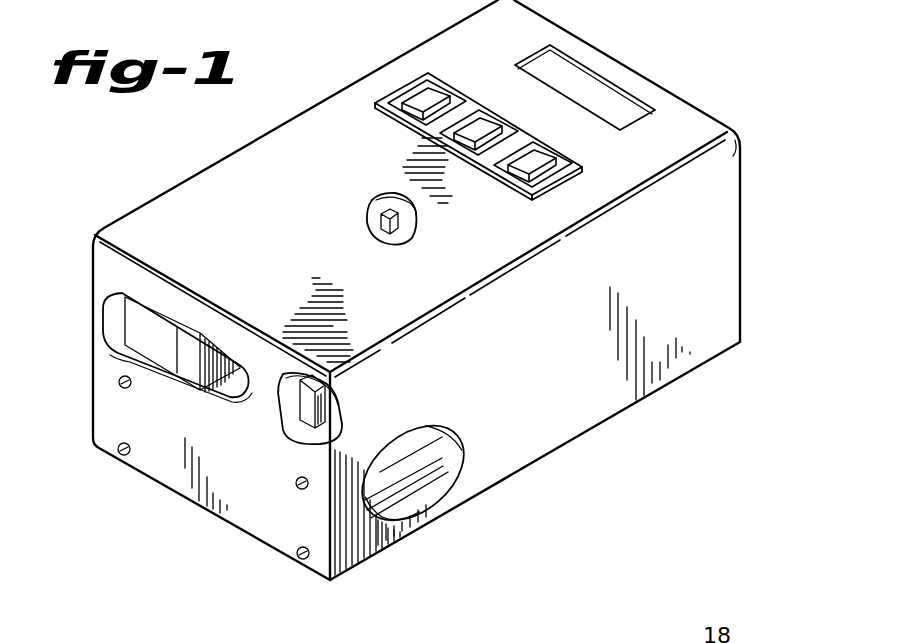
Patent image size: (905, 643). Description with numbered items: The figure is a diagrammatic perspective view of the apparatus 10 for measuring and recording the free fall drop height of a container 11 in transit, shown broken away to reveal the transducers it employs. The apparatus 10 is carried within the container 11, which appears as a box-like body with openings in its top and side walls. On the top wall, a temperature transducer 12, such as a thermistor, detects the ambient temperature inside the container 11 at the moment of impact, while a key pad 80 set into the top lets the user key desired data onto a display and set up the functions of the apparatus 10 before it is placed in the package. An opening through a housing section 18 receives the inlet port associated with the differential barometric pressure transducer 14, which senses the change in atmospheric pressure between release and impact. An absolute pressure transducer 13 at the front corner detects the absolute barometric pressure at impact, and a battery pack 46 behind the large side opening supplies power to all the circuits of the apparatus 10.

The apparatus 10 is at (676, 66).
The container 11 is at (205, 172).
The temperature transducer 12 is at (393, 224).
The absolute pressure transducer 13 is at (330, 403).
The differential barometric pressure transducer 14 is at (137, 328).
The housing section 18 is at (573, 76).
The battery pack 46 is at (420, 466).
The key pad 80 is at (442, 80).